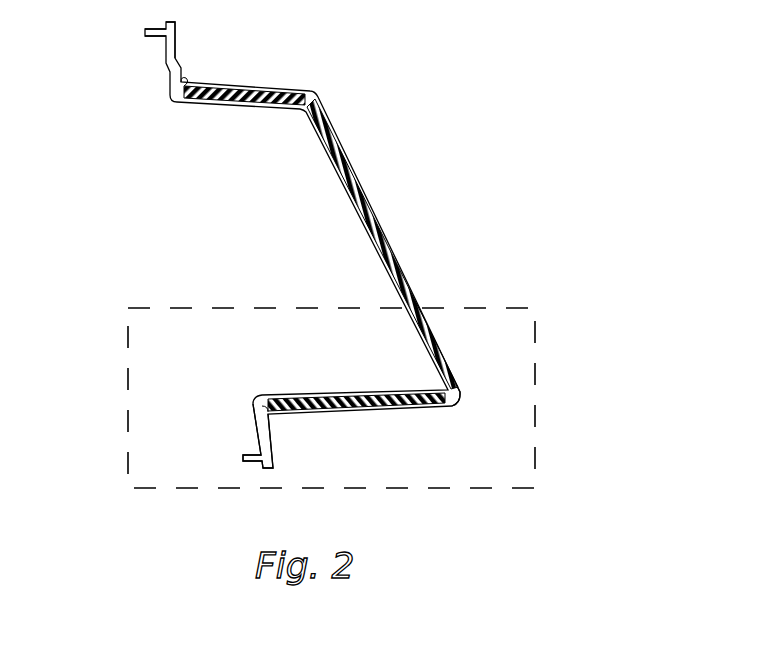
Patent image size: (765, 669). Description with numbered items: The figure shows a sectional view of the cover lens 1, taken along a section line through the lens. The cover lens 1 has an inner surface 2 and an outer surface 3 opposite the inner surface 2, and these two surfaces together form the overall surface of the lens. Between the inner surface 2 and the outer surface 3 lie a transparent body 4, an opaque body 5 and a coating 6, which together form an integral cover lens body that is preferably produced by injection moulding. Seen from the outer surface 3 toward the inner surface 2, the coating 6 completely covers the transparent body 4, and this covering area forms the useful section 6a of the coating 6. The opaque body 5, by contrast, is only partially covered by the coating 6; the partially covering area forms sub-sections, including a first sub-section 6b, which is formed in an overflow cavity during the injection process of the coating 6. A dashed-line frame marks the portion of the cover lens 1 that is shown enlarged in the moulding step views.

The cover lens 1 is at (482, 145).
The inner surface 2 is at (320, 156).
The outer surface 3 is at (184, 38).
The transparent body 4 is at (365, 222).
The opaque body 5 is at (267, 111).
The coating 6 is at (402, 260).
The useful section 6a is at (457, 360).
The first sub-section 6b is at (274, 432).